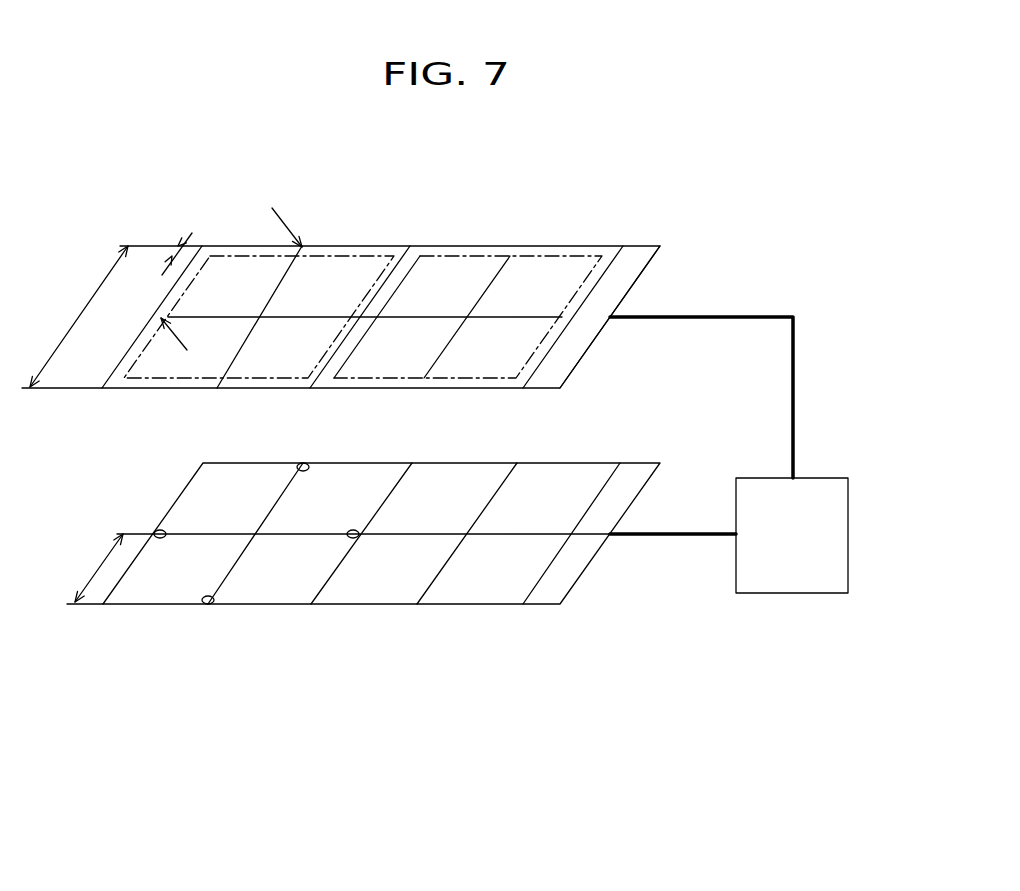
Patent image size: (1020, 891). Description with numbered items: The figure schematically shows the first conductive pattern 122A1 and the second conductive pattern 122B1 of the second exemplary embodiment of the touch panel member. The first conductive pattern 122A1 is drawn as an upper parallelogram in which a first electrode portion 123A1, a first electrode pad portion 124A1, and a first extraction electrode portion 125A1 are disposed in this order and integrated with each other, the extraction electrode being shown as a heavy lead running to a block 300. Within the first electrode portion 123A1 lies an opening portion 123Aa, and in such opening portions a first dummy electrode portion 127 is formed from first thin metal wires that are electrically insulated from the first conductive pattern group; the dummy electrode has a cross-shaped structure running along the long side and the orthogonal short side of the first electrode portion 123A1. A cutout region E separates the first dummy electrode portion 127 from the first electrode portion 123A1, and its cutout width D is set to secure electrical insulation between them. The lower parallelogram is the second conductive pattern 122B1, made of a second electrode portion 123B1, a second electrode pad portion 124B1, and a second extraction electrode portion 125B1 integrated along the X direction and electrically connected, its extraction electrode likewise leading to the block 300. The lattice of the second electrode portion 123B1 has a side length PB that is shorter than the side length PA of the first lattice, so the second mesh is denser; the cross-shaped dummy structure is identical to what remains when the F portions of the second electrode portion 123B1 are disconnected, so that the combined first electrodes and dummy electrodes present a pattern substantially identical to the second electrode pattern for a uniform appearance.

The first conductive pattern 122A1 is at (768, 190).
The first electrode portion 123A1 is at (547, 247).
The opening portion 123Aa is at (441, 256).
The first electrode pad portion 124A1 is at (637, 252).
The first extraction electrode portion 125A1 is at (726, 315).
The first dummy electrode portion 127 is at (310, 317).
The second conductive pattern 122B1 is at (652, 672).
The second electrode portion 123B1 is at (452, 597).
The second electrode pad portion 124B1 is at (540, 600).
The second extraction electrode portion 125B1 is at (652, 538).
The control unit 300 is at (793, 583).
The length of one side of first square lattice PA is at (79, 316).
The length of one side of second square lattice PB is at (95, 568).
The cutout width D is at (168, 254).
The cutout region E is at (231, 278).
The F portions F is at (256, 543).